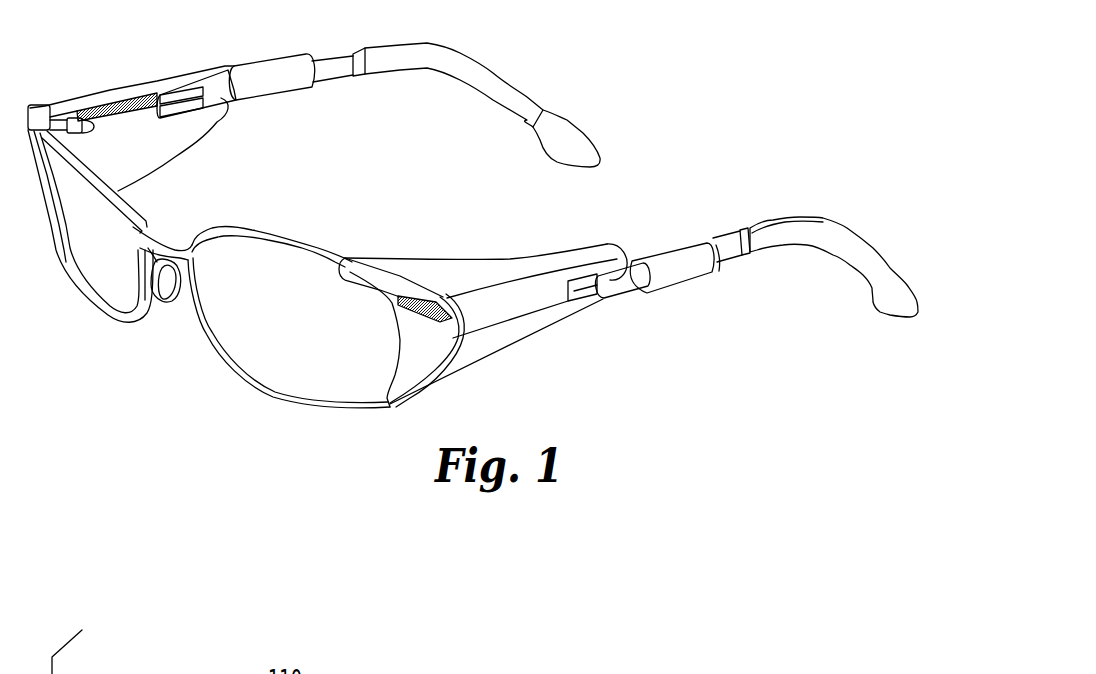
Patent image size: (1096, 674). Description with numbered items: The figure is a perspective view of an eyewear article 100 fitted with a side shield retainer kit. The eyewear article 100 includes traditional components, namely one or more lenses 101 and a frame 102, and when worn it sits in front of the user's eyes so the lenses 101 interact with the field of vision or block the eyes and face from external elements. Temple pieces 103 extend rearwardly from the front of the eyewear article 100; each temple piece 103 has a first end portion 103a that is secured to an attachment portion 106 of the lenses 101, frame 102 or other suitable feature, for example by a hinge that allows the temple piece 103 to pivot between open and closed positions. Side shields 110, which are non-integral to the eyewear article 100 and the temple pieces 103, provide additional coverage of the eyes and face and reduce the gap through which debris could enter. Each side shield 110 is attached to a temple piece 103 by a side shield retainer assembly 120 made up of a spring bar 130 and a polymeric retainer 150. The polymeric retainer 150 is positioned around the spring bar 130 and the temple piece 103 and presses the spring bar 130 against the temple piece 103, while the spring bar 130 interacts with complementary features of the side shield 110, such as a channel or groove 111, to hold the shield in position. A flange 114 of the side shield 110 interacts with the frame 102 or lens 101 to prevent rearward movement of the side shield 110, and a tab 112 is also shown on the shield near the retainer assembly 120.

The eyewear article 100 is at (674, 53).
The lens 101 is at (283, 373).
The frame 102 is at (207, 333).
The temple piece 103 is at (335, 68).
The first end portion 103a is at (102, 110).
The attachment portion 106 is at (75, 117).
The side shield 110 is at (467, 363).
The complementary feature 111 is at (182, 86).
The tab 112 is at (582, 290).
The flange 114 is at (363, 283).
The side shield retainer assembly 120 is at (671, 216).
The spring bar 130 is at (636, 298).
The polymeric retainer 150 is at (694, 283).